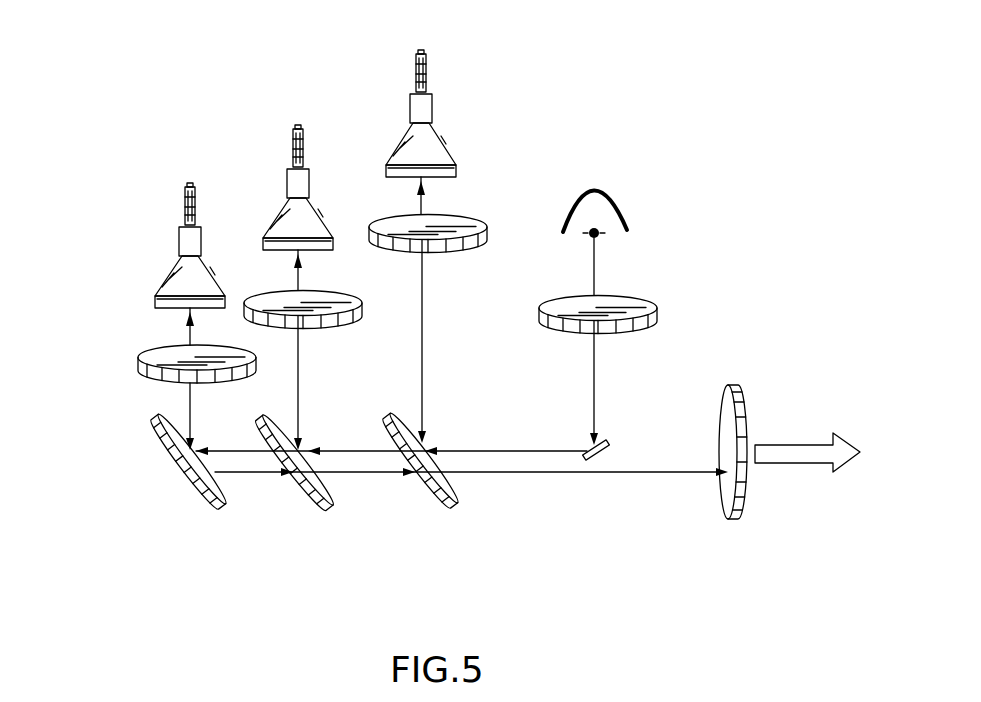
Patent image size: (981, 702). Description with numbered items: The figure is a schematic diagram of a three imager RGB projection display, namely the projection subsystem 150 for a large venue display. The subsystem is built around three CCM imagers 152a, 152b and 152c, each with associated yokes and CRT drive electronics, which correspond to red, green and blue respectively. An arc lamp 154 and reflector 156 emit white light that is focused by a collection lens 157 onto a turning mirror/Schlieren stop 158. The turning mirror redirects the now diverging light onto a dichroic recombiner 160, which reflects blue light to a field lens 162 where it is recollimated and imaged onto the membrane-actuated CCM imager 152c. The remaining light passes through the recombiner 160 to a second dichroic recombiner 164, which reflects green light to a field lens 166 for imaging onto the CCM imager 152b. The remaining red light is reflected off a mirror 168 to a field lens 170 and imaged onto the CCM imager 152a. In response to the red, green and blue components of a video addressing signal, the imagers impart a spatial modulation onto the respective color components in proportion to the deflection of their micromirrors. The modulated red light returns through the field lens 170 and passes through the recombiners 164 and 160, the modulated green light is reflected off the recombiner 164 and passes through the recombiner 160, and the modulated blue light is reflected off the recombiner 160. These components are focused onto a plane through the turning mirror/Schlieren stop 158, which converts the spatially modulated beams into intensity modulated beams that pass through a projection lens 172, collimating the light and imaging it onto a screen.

The projection subsystem 150 is at (124, 166).
The CCM imager 152a is at (183, 280).
The CCM imager 152b is at (295, 228).
The CCM imager 152c is at (415, 157).
The arc lamp 154 is at (598, 237).
The reflector 156 is at (613, 193).
The collection lens 157 is at (655, 305).
The turning mirror/Schlieren stop 158 is at (603, 440).
The dichroic recombiner 160 is at (440, 500).
The field lens 162 is at (442, 253).
The second dichroic recombiner 164 is at (310, 495).
The field lens 166 is at (325, 327).
The mirror 168 is at (202, 497).
The field lens 170 is at (138, 373).
The projection lens 172 is at (758, 502).